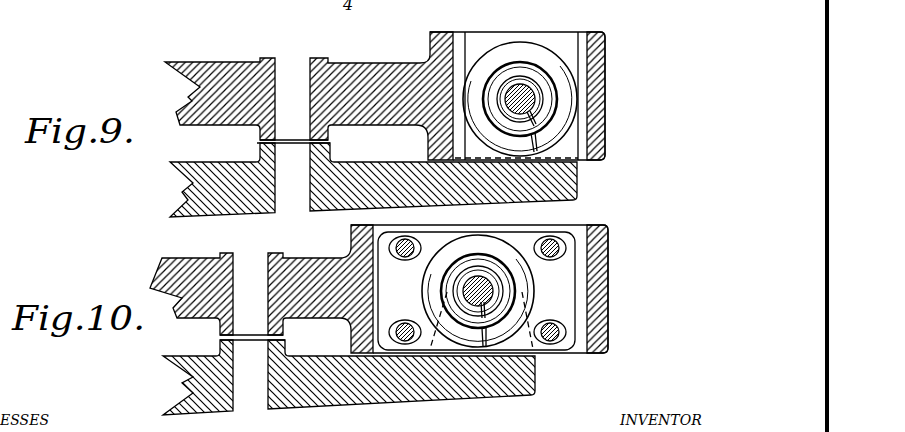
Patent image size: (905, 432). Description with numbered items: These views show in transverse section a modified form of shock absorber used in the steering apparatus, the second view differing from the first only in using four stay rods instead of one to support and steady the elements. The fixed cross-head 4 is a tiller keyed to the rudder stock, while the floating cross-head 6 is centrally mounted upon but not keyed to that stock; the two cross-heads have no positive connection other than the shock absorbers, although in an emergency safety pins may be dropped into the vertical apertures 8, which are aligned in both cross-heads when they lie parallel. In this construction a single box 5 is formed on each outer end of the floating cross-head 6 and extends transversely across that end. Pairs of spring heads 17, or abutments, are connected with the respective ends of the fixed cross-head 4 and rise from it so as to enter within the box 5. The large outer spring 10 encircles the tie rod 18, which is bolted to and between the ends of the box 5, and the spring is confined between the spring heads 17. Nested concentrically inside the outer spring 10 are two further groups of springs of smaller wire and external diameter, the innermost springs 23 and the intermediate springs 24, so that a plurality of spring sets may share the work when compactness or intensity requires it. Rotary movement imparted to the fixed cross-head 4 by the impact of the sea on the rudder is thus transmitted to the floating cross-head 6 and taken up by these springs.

In FIG. 9, the fixed cross-head 4 is at (208, 183).
In FIG. 10, the fixed cross-head 4 is at (195, 366).
In FIG. 9, the floating cross-head 6 is at (228, 76).
In FIG. 10, the floating cross-head 6 is at (201, 273).
In FIG. 9, the vertical apertures 8 is at (293, 132).
In FIG. 10, the vertical apertures 8 is at (252, 332).
In FIG. 9, the box 5 is at (574, 48).
In FIG. 10, the box 5 is at (582, 233).
In FIG. 9, the spring 10 is at (532, 78).
In FIG. 10, the spring 10 is at (527, 297).
In FIG. 9, the spring heads 17 is at (565, 145).
In FIG. 10, the spring heads 17 is at (520, 345).
In FIG. 9, the tie rod 18 is at (512, 85).
In FIG. 10, the tie rod 18 is at (493, 288).
In FIG. 10, the innermost springs 23 is at (467, 305).
In FIG. 10, the intermediate springs 24 is at (450, 290).